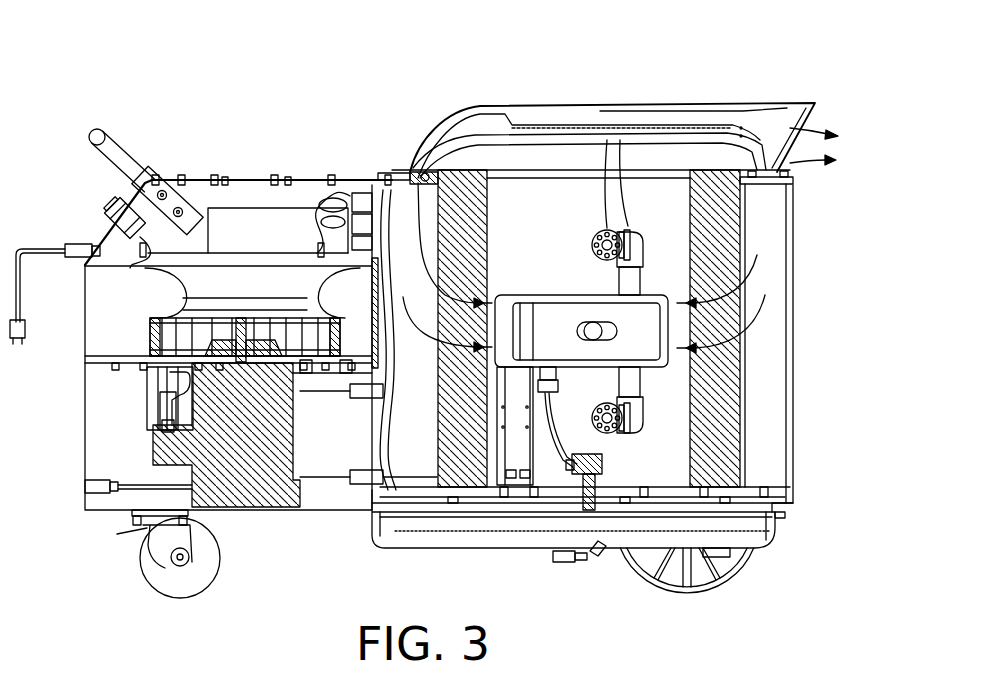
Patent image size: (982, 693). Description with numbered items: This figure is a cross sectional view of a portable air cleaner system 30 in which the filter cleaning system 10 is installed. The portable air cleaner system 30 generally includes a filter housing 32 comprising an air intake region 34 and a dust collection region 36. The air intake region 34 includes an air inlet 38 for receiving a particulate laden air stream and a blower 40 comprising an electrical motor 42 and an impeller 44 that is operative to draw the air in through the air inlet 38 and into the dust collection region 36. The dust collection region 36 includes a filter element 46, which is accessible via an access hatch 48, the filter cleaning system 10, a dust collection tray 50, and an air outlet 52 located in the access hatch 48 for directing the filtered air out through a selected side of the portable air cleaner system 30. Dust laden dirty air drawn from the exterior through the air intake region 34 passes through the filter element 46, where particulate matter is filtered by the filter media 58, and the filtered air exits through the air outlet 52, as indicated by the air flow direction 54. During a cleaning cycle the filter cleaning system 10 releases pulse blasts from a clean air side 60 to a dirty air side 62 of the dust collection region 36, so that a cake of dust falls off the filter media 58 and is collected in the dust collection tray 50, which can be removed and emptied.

The portable air cleaner system 30 is at (392, 82).
The air inlet 38 is at (96, 128).
The access hatch 48 is at (477, 120).
The air flow direction 54 is at (417, 170).
The air outlet 52 is at (805, 128).
The filter cleaning system 10 is at (566, 275).
The filter element 46 is at (735, 250).
The dust collection region 36 is at (780, 305).
The impeller 44 is at (165, 320).
The air intake region 34 is at (97, 352).
The blower 40 is at (135, 404).
The electrical motor 42 is at (160, 448).
The filter housing 32 is at (330, 512).
The dirty air side 62 is at (403, 460).
The filter media 58 is at (462, 455).
The clean air side 60 is at (683, 420).
The dust collection tray 50 is at (763, 522).